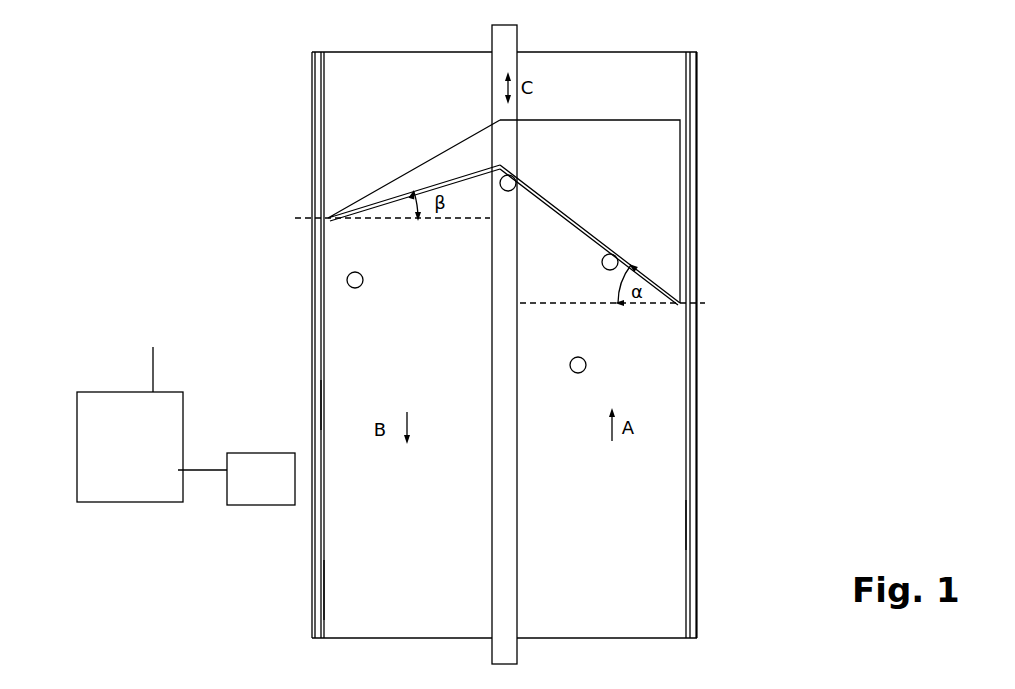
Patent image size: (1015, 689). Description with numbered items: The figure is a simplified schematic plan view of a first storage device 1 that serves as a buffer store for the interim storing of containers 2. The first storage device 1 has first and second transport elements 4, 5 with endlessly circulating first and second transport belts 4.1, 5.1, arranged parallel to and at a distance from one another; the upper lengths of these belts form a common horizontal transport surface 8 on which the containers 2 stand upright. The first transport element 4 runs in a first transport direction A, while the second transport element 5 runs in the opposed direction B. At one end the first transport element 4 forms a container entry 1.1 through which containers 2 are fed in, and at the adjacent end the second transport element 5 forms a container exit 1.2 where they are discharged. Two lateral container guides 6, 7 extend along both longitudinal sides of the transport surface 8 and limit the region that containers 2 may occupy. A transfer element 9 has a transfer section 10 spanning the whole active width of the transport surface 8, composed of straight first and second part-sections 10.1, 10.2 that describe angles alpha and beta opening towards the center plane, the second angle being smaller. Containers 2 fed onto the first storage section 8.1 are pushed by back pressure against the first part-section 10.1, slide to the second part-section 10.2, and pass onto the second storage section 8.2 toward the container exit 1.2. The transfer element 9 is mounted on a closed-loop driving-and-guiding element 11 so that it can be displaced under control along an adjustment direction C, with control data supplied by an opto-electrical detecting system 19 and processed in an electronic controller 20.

The first storage device 1 is at (775, 118).
The container entry 1.1 is at (615, 637).
The container exit 1.2 is at (372, 639).
The containers 2 is at (615, 256).
The first transport element 4 is at (699, 479).
The first transport belt 4.1 is at (653, 356).
The second transport element 5 is at (311, 175).
The second transport belt 5.1 is at (345, 340).
The lateral container guide 6 is at (688, 523).
The lateral container guide 7 is at (320, 402).
The transport surface 8 is at (357, 533).
The first storage section 8.1 is at (596, 535).
The second storage section 8.2 is at (401, 535).
The transfer element 9 is at (683, 182).
The transfer section 10 is at (504, 209).
The first part-section 10.1 is at (562, 210).
The second part-section 10.2 is at (433, 183).
The driving-and-guiding element 11 is at (508, 332).
The opto-electrical detecting system 19 is at (249, 489).
The electronic controller 20 is at (120, 457).